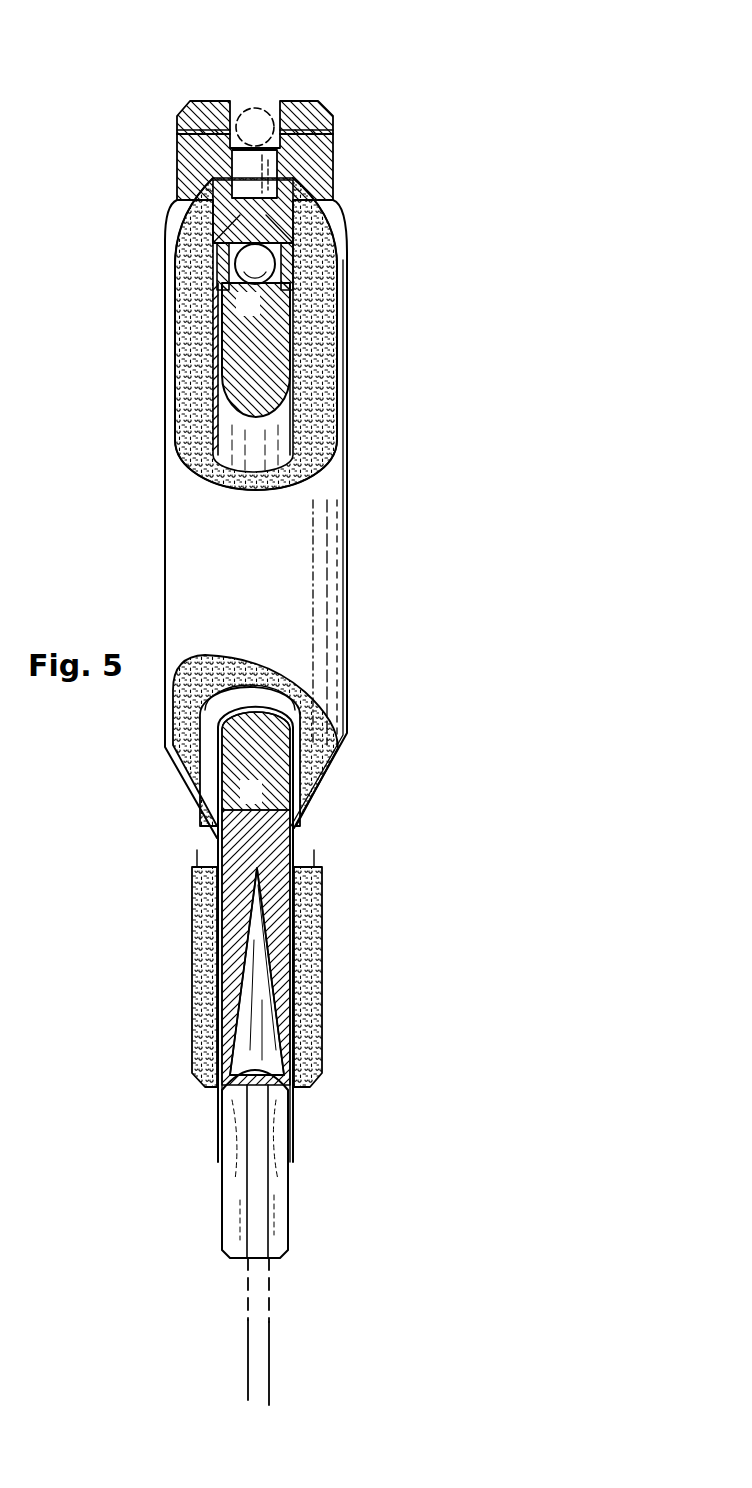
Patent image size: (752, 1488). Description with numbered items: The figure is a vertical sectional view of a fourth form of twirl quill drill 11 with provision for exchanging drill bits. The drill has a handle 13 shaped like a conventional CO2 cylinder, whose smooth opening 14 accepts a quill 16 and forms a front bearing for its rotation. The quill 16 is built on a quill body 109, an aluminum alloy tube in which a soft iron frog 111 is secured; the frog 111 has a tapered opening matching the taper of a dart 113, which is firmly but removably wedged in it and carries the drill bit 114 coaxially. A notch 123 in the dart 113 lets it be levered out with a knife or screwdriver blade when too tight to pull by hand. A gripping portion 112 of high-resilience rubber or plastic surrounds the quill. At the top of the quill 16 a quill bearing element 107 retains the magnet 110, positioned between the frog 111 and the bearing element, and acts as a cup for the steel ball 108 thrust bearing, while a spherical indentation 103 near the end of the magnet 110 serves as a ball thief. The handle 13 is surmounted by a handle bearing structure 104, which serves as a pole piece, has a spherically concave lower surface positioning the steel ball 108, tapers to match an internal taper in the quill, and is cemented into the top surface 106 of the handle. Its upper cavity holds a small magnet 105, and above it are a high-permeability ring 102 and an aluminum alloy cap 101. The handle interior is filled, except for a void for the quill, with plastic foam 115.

The twirl quill drill 11 is at (348, 495).
The handle 13 is at (350, 596).
The smooth opening 14 is at (298, 841).
The quill 16 is at (217, 848).
The cap 101 is at (325, 100).
The ring 102 is at (333, 130).
The spherical indentation 103 is at (290, 306).
The handle bearing structure 104 is at (333, 163).
The small magnet 105 is at (232, 162).
The top surface 106 is at (190, 189).
The quill bearing element 107 is at (295, 250).
The steel ball 108 is at (268, 107).
The quill body 109 is at (215, 433).
The magnet 110 is at (222, 353).
The frog 111 is at (288, 918).
The gripping portion 112 is at (192, 949).
The dart 113 is at (283, 1013).
The drill bit 114 is at (270, 1322).
The plastic foam 115 is at (328, 346).
The notch 123 is at (283, 1169).